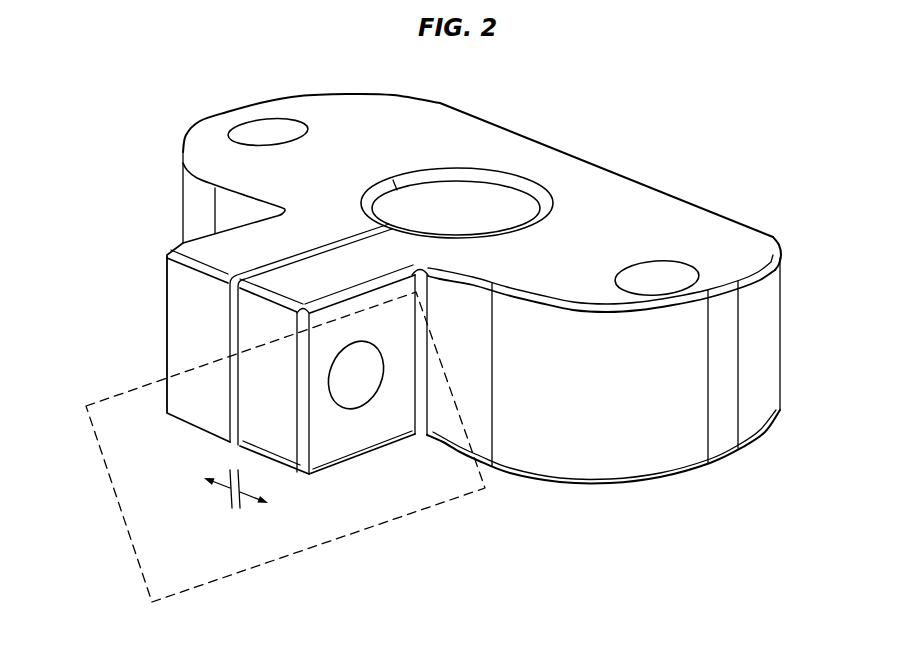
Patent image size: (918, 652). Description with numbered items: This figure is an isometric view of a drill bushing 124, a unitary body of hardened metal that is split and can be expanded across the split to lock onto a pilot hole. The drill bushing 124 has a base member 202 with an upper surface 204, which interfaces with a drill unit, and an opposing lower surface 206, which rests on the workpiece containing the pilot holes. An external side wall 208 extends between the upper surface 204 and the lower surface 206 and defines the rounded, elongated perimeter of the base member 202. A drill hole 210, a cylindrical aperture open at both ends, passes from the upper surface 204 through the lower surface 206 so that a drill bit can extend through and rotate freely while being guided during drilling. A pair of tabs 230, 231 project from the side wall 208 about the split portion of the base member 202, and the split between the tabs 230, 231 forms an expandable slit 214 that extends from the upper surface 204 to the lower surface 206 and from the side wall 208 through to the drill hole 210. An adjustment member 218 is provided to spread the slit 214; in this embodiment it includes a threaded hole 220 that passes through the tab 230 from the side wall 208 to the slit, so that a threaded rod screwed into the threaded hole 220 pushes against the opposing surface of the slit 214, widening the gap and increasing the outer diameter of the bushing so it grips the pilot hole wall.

The drill bushing 124 is at (673, 137).
The upper surface 204 is at (674, 218).
The base member 202 is at (757, 363).
The lower surface 206 is at (563, 491).
The external side wall 208 is at (719, 428).
The drill hole 210 is at (513, 200).
The slit 214 is at (224, 330).
The adjustment member 218 is at (129, 533).
The threaded hole 220 is at (360, 388).
The tab 230 is at (283, 447).
The tab 231 is at (207, 406).